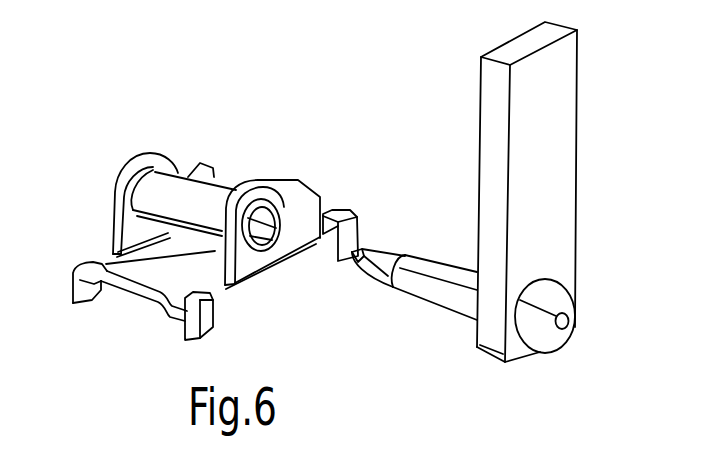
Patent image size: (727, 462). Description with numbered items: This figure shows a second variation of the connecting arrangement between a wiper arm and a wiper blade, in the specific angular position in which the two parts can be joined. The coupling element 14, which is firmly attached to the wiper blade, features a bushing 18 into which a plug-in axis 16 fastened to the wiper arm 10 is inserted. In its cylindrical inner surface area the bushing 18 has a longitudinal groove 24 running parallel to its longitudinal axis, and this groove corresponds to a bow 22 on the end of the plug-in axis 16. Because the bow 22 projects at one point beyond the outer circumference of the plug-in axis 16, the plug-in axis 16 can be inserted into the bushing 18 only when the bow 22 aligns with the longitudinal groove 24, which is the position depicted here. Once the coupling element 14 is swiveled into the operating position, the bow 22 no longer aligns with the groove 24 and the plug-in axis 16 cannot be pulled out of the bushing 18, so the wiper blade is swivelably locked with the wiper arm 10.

The wiper arm 10 is at (542, 162).
The coupling element 14 is at (213, 167).
The plug-in axis 16 is at (447, 292).
The bushing 18 is at (165, 190).
The bow 22 is at (370, 280).
The longitudinal groove 24 is at (272, 243).